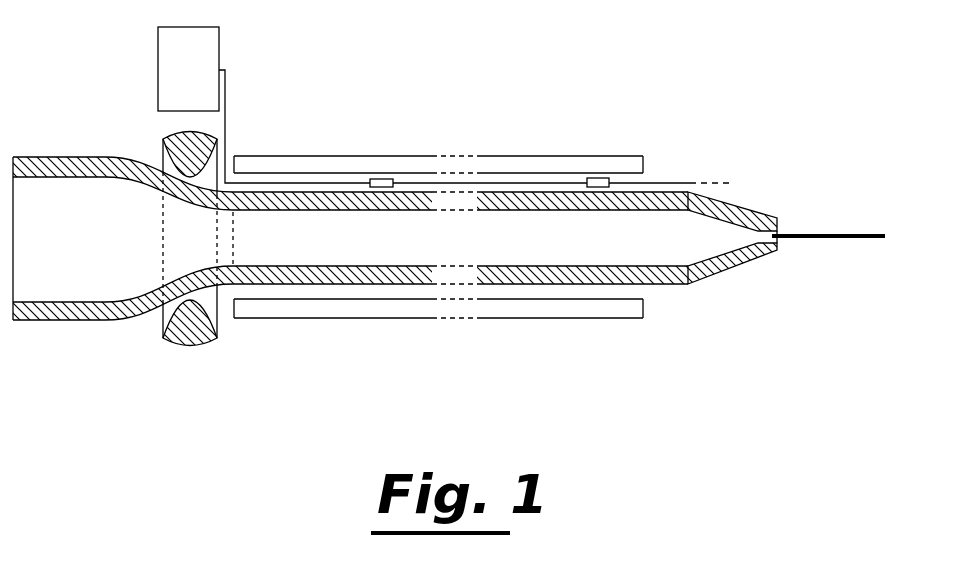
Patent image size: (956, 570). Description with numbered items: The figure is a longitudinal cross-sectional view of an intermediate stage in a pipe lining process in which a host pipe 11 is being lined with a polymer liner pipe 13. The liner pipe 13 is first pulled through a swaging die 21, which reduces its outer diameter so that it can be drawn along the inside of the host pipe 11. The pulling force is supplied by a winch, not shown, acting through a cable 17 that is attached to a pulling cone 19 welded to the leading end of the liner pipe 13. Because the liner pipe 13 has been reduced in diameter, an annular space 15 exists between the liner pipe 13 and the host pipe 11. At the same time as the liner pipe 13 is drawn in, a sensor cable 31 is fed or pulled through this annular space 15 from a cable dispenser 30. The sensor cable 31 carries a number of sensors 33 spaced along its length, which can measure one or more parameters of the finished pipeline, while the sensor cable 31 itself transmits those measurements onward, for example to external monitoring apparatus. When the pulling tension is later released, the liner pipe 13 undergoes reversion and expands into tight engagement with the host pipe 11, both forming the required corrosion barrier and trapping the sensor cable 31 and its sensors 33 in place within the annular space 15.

The host pipe 11 is at (438, 227).
The liner pipe 13 is at (668, 202).
The annular space 15 is at (513, 292).
The cable 17 is at (837, 230).
The pulling cone 19 is at (728, 263).
The swaging die 21 is at (185, 332).
The cable dispenser 30 is at (445, 105).
The sensor cable 31 is at (307, 183).
The sensors 33 is at (385, 179).